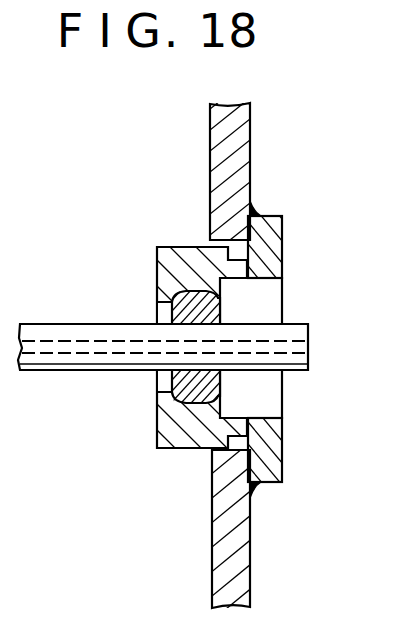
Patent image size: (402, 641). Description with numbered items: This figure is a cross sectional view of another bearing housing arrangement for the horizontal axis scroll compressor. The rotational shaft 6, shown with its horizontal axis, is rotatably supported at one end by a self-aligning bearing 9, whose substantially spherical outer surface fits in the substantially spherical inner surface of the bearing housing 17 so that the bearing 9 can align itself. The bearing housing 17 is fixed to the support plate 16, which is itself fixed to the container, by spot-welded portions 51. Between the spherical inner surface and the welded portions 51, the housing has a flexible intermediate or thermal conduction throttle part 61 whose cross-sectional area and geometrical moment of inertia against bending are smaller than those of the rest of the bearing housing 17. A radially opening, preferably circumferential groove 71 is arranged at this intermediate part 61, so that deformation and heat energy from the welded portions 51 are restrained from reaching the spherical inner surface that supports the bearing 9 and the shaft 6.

The rotational shaft 6 is at (57, 367).
The self-aligning bearing 9 is at (163, 310).
The support plate 16 is at (245, 128).
The bearing housing 17 is at (272, 236).
The spot-welded portions 51 is at (256, 211).
The intermediate part 61 is at (240, 279).
The radially opening groove 71 is at (238, 417).